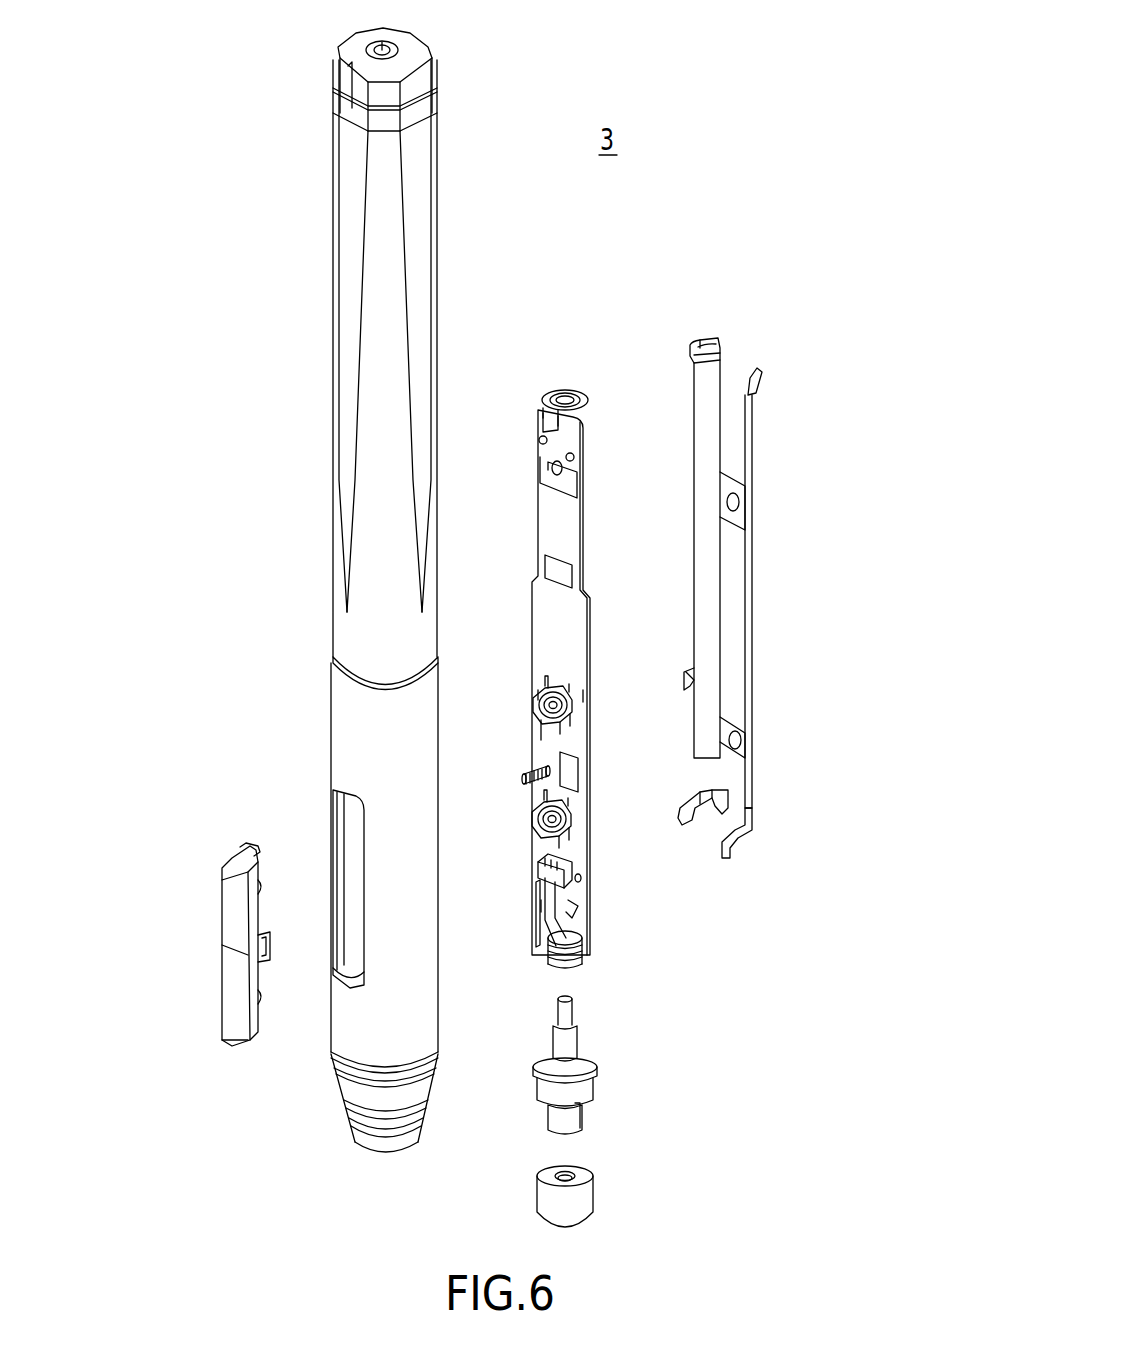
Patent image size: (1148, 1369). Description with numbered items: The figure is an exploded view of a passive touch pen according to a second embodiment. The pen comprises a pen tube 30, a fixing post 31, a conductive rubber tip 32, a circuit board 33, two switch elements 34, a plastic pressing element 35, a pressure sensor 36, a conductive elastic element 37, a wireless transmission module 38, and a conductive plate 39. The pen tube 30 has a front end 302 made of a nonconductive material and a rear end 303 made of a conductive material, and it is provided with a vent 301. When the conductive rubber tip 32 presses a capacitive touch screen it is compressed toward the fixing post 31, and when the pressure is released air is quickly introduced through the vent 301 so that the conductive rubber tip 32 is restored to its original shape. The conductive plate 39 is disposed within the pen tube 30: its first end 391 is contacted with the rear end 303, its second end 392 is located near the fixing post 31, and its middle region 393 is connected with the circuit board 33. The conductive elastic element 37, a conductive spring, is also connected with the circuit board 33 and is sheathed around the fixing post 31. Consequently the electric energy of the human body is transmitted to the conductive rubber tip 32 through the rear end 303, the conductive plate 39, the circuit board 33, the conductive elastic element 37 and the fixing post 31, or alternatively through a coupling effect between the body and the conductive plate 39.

The pen tube 30 is at (322, 248).
The vent 301 is at (352, 843).
The front end 302 is at (346, 730).
The rear end 303 is at (418, 325).
The fixing post 31 is at (582, 1052).
The conductive rubber tip 32 is at (570, 1202).
The circuit board 33 is at (553, 530).
The switch elements 34 is at (540, 700).
The plastic pressing element 35 is at (230, 915).
The pressure sensor 36 is at (585, 900).
The conductive elastic element 37 is at (578, 947).
The wireless transmission module 38 is at (573, 757).
The conductive plate 39 is at (762, 560).
The first end 391 is at (702, 345).
The second end 392 is at (680, 795).
The middle region 393 is at (690, 667).